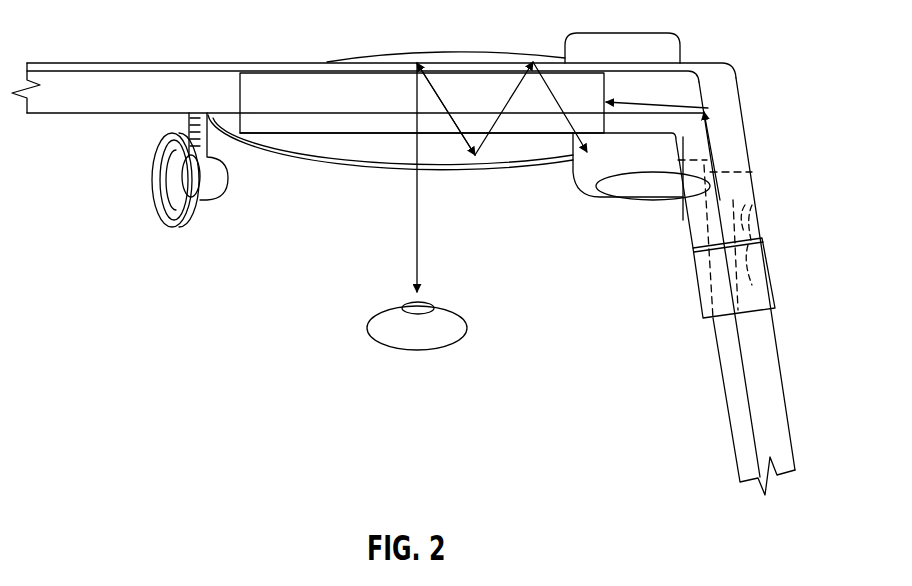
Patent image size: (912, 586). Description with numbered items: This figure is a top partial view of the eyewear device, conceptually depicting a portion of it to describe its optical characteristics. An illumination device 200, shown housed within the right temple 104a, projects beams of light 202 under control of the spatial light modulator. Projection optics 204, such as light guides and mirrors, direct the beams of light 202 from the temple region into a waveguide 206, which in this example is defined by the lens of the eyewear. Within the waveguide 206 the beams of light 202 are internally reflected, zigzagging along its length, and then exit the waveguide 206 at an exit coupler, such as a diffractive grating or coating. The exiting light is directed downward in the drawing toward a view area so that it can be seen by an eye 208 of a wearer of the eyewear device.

The right temple 104a is at (786, 397).
The illumination device 200 is at (776, 283).
The beams of light 202 is at (722, 197).
The projection optics 204 is at (741, 113).
The waveguide 206 is at (533, 112).
The eye 208 is at (467, 331).